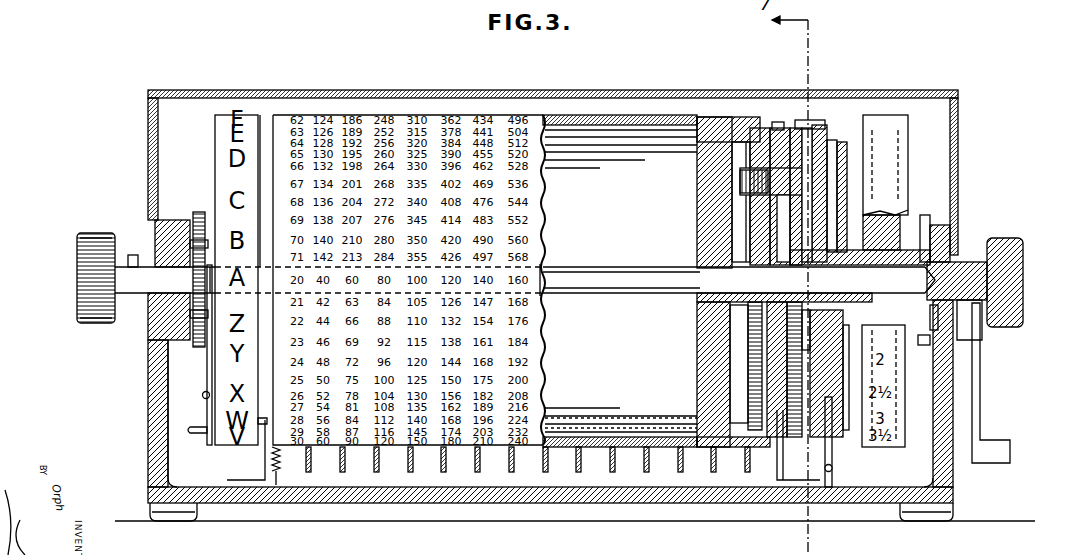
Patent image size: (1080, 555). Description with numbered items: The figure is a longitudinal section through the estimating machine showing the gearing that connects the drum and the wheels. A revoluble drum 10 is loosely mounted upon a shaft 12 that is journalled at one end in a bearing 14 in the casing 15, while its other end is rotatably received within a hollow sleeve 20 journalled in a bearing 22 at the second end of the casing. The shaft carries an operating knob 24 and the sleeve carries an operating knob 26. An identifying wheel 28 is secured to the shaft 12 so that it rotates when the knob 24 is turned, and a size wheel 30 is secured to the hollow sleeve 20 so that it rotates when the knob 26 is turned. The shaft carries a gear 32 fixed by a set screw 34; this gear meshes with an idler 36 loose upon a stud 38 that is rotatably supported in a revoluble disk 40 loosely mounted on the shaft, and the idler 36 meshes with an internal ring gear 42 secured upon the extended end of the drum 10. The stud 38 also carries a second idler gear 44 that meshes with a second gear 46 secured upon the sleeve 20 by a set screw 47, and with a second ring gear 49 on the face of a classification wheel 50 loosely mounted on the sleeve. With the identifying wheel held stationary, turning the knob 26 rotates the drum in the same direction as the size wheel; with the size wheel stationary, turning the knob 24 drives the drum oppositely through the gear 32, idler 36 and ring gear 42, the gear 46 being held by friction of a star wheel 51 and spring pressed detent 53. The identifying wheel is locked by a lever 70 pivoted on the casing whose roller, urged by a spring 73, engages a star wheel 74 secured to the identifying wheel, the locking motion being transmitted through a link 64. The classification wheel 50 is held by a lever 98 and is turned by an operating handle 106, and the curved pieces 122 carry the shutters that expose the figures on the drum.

The revoluble drum 10 is at (556, 105).
The shaft 12 is at (568, 267).
The bearing 14 is at (150, 320).
The casing 15 is at (150, 160).
The hollow sleeve 20 is at (948, 262).
The bearing 22 is at (958, 312).
The operating knob 24 is at (78, 258).
The operating knob 26 is at (1020, 274).
The identifying wheel 28 is at (258, 90).
The size wheel 30 is at (900, 135).
The gear 32 is at (697, 318).
The set screw 34 is at (697, 243).
The idler 36 is at (697, 200).
The stud 38 is at (775, 168).
The revoluble disk 40 is at (697, 368).
The internal ring gear 42 is at (748, 130).
The second idler gear 44 is at (818, 130).
The second gear 46 is at (806, 330).
The set screw 47 is at (825, 208).
The second ring gear 49 is at (803, 130).
The classification wheel 50 is at (835, 130).
The star wheel 51 is at (940, 330).
The spring pressed detent 53 is at (930, 343).
The link 64 is at (190, 430).
The lever 70 is at (207, 365).
The spring 73 is at (203, 396).
The star wheel 74 is at (200, 212).
The lever 98 is at (845, 455).
The operating handle 106 is at (980, 425).
The curved piece 122 is at (512, 472).